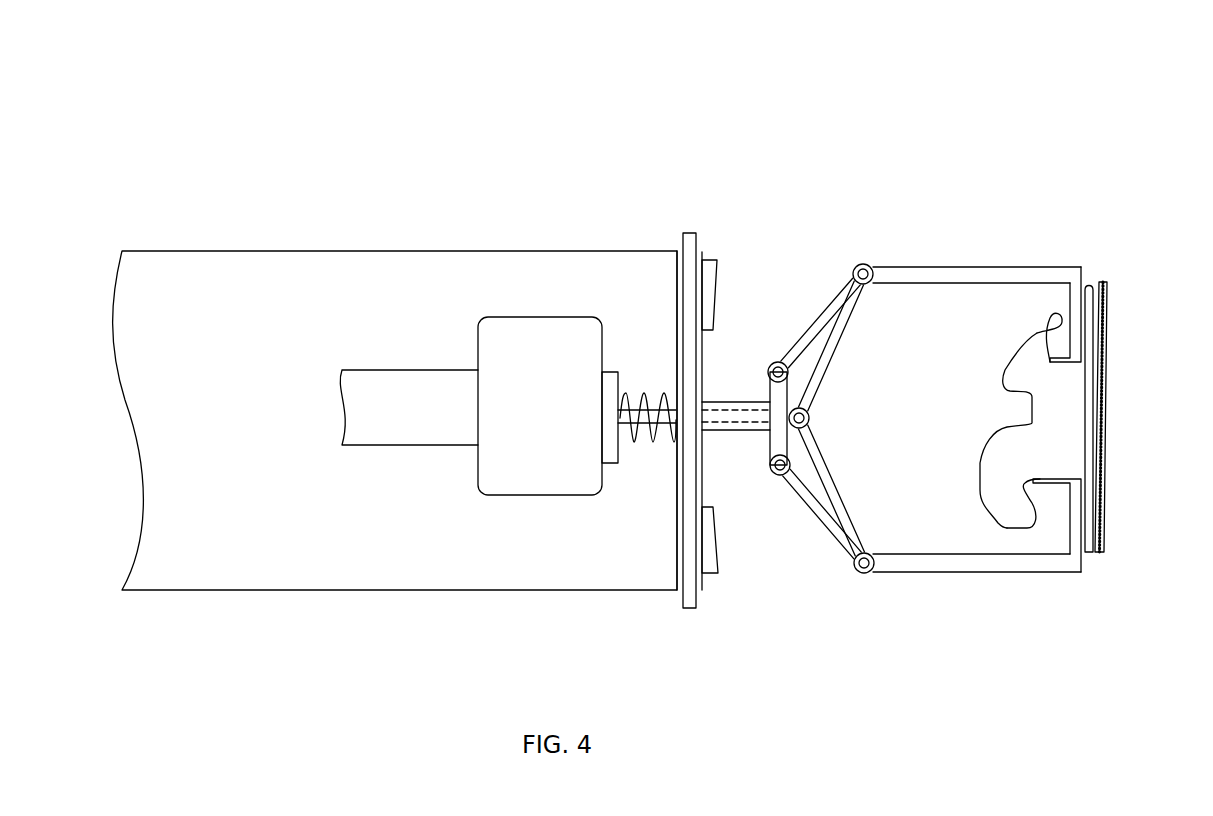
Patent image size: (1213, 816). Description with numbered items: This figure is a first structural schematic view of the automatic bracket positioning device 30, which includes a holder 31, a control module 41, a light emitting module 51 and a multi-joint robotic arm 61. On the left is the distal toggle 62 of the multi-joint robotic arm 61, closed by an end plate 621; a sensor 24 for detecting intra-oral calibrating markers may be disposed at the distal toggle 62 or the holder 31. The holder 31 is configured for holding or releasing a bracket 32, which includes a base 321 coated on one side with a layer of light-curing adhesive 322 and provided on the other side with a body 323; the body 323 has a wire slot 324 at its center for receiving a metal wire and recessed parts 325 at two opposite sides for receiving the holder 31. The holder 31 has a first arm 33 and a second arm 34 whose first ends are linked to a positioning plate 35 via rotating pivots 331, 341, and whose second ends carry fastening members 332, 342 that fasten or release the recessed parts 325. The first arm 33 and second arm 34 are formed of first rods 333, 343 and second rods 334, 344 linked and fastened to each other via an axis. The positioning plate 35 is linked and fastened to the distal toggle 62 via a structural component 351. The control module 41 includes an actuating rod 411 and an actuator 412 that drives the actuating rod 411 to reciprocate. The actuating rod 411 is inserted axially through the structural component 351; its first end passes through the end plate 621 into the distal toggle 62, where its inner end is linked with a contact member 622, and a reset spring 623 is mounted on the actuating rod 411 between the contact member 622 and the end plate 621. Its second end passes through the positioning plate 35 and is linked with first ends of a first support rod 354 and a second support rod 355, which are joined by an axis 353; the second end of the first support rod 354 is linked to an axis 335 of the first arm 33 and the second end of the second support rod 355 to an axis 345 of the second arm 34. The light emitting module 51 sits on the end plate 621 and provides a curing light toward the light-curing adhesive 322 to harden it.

The automatic bracket positioning device 30 is at (644, 90).
The holder 31 is at (938, 203).
The bracket 32 is at (1122, 273).
The base 321 is at (1098, 283).
The light-curing adhesive 322 is at (1108, 350).
The body 323 is at (1070, 417).
The wire slot 324 is at (1012, 407).
The recessed part 325 is at (1055, 350).
The first arm 33 is at (855, 246).
The rotating pivot 331 is at (777, 362).
The fastening member 332 is at (1073, 303).
The first rod 333 is at (822, 312).
The second rod 334 is at (935, 267).
The axis 335 is at (857, 265).
The second arm 34 is at (917, 582).
The rotating pivot 341 is at (783, 476).
The fastening member 342 is at (1065, 530).
The first rod 343 is at (838, 548).
The second rod 344 is at (953, 572).
The axis 345 is at (862, 573).
The positioning plate 35 is at (770, 388).
The structural component 351 is at (737, 431).
The axis 353 is at (810, 418).
The first support rod 354 is at (830, 362).
The second support rod 355 is at (838, 480).
The sensor 24 is at (683, 235).
The control module 41 is at (566, 303).
The actuating rod 411 is at (652, 438).
The actuator 412 is at (486, 340).
The light emitting module 51 is at (710, 260).
The multi-joint robotic arm 61 is at (319, 236).
The distal toggle 62 is at (228, 251).
The end plate 621 is at (677, 308).
The contact member 622 is at (610, 387).
The reset spring 623 is at (623, 437).